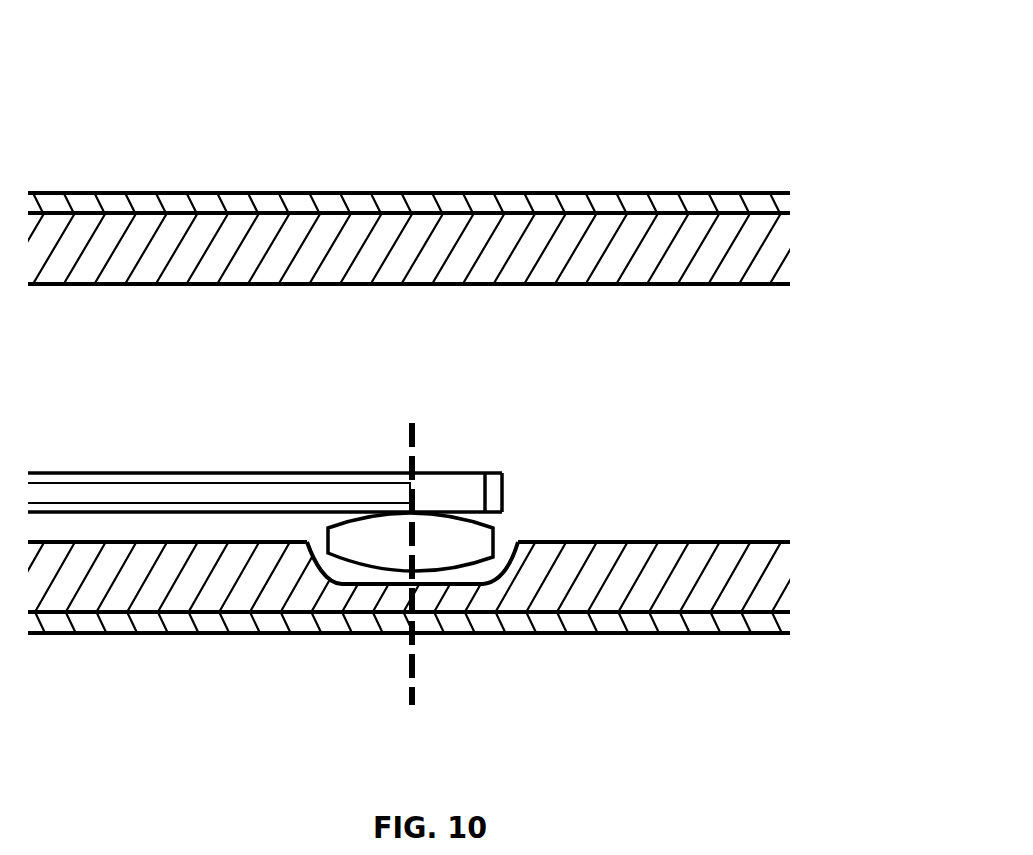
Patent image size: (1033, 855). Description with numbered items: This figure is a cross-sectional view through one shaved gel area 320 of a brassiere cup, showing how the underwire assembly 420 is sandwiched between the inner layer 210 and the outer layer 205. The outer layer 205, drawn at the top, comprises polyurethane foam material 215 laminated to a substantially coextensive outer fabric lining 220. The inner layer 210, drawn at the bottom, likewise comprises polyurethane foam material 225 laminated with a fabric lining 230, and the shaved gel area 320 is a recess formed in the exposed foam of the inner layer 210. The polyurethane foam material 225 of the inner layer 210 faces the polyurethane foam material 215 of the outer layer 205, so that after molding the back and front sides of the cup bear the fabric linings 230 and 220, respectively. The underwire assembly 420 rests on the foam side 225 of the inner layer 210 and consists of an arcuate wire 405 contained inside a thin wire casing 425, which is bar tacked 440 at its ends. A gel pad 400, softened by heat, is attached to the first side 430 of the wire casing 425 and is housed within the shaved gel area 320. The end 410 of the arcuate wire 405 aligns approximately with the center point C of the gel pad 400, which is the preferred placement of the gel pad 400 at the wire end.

The outer layer 205 is at (637, 122).
The outer fabric lining 220 is at (228, 193).
The polyurethane foam material 215 is at (107, 285).
The underwire assembly 420 is at (352, 442).
The wire casing 425 is at (177, 473).
The first side 430 is at (196, 503).
The arcuate wire 405 is at (248, 492).
The end 410 is at (417, 493).
The bar tack 440 is at (485, 492).
The gel pad 400 is at (473, 543).
The inner layer 210 is at (515, 695).
The polyurethane foam material 225 is at (645, 542).
The shaved gel area 320 is at (350, 573).
The fabric lining 230 is at (615, 633).